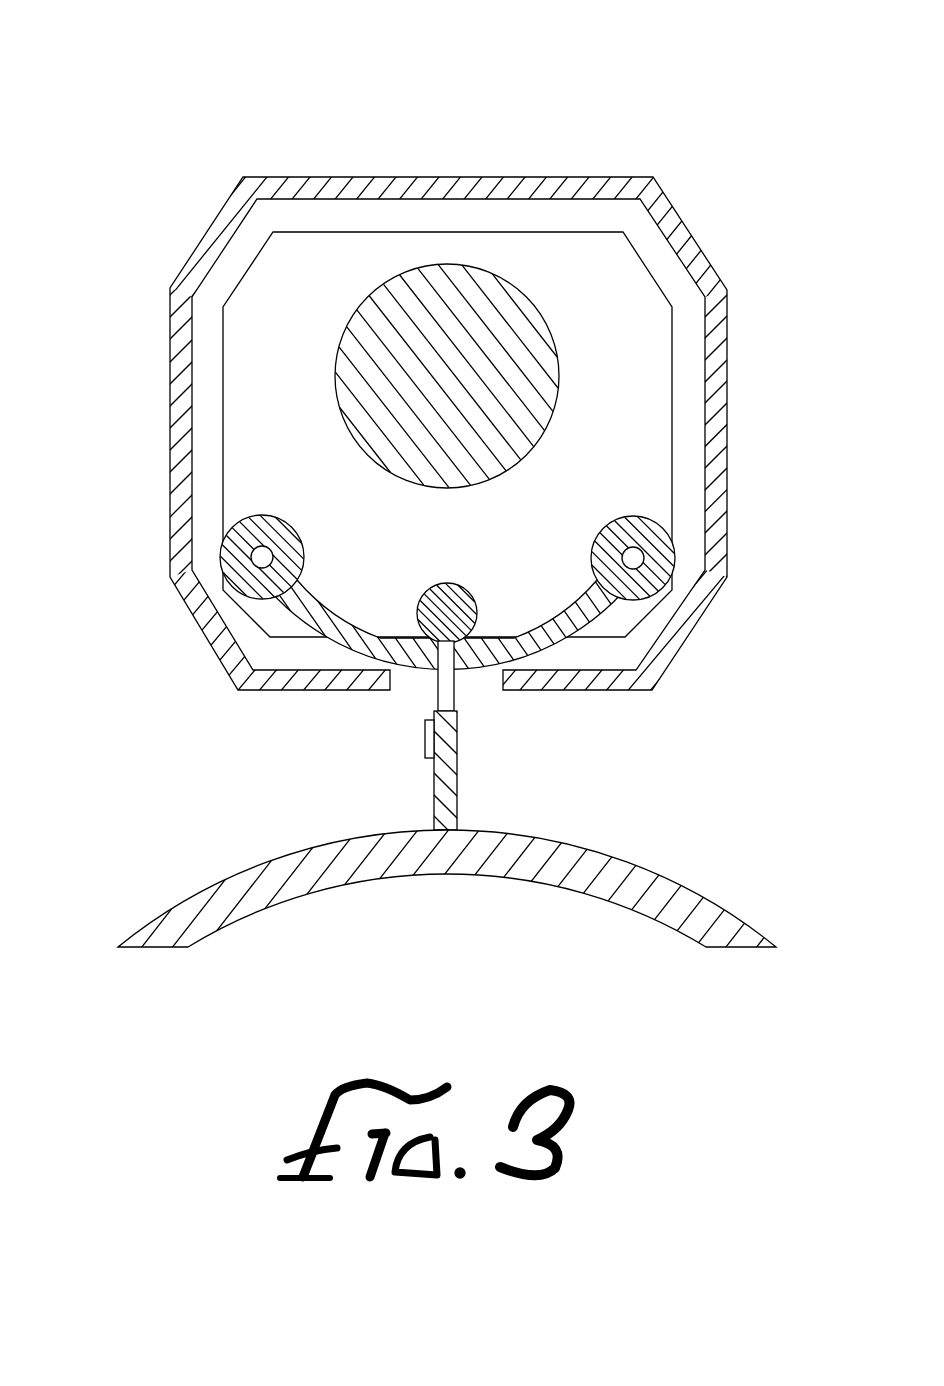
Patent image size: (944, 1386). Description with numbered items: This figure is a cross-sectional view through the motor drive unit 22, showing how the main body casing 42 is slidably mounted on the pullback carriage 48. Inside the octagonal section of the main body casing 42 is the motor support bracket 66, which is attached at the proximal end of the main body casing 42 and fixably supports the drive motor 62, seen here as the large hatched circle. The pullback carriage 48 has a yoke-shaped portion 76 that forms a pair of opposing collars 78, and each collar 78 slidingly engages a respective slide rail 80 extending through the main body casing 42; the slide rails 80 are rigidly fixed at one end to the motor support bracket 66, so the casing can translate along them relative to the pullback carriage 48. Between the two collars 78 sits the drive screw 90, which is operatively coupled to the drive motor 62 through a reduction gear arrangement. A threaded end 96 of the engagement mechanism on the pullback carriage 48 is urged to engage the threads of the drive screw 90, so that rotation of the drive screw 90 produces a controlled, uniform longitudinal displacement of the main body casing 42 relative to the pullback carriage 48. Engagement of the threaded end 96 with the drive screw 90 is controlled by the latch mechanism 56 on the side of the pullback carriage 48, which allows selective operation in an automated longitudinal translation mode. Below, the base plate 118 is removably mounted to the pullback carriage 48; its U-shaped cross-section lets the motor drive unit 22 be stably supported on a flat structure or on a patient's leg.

The motor drive unit 22 is at (337, 136).
The main body casing 42 is at (677, 232).
The motor support bracket 66 is at (265, 285).
The drive motor 62 is at (501, 331).
The yoke-shaped portion 76 is at (543, 623).
The collar 78 is at (250, 557).
The slide rail 80 is at (271, 516).
The drive screw 90 is at (429, 586).
The threaded end 96 is at (436, 698).
The pullback carriage 48 is at (448, 775).
The latch mechanism 56 is at (426, 752).
The base plate 118 is at (708, 918).